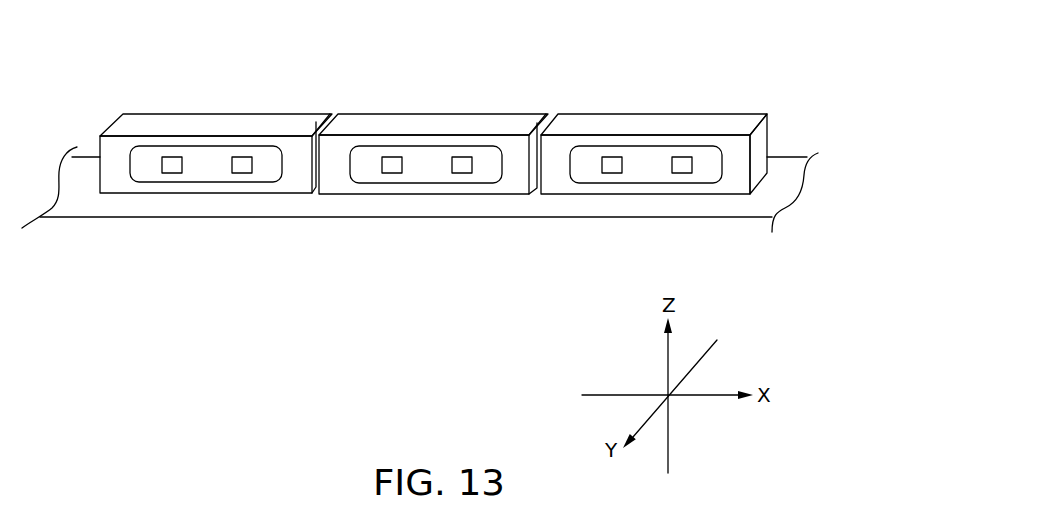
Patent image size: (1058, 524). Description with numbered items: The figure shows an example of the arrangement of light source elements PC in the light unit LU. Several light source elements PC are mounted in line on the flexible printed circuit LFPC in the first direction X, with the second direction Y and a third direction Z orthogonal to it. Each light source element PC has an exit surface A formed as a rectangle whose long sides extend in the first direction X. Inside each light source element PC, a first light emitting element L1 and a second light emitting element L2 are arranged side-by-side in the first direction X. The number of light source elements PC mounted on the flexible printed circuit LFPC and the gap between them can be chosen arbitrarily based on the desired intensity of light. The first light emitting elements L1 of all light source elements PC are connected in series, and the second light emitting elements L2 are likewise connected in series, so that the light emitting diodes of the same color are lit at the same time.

The light unit LU is at (762, 70).
The light source element PC is at (220, 127).
The first light emitting element L1 is at (172, 173).
The second light emitting element L2 is at (242, 173).
The exit surface A is at (148, 167).
The flexible printed circuit LFPC is at (758, 210).